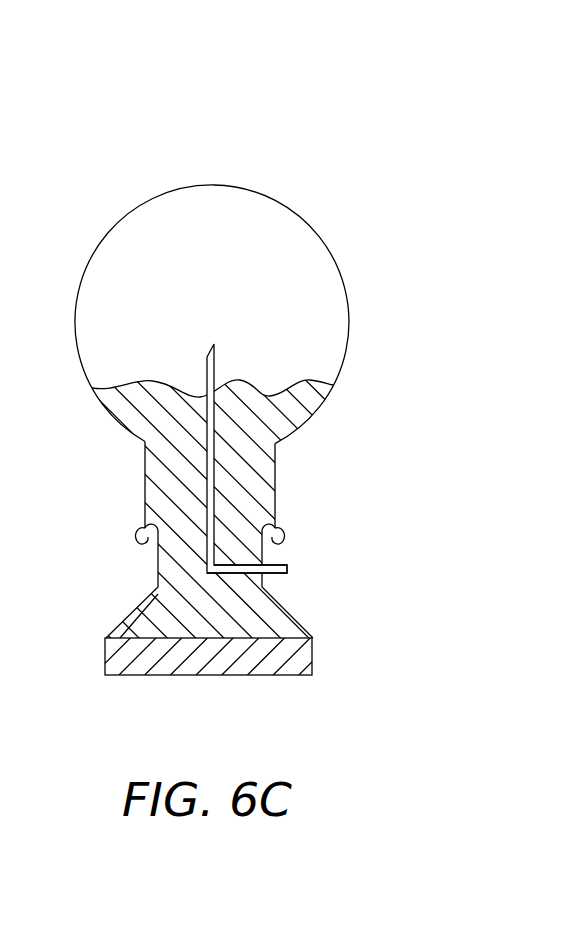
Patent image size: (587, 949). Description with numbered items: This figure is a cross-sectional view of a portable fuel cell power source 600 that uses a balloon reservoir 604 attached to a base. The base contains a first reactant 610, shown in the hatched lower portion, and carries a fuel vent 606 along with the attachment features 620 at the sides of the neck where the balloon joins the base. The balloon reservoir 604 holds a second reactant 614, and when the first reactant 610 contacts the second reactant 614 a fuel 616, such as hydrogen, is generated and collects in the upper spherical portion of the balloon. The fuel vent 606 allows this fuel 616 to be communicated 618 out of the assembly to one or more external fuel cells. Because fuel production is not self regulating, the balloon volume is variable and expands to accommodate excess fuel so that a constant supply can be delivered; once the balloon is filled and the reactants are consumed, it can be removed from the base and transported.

The portable fuel cell power source 600 is at (455, 83).
The balloon reservoir 604 is at (100, 246).
The fuel 616 is at (299, 228).
The second reactant 614 is at (266, 455).
The retention hook 620 is at (140, 535).
The fuel vent 606 is at (284, 564).
The fuel communication 618 is at (278, 575).
The first reactant 610 is at (312, 655).